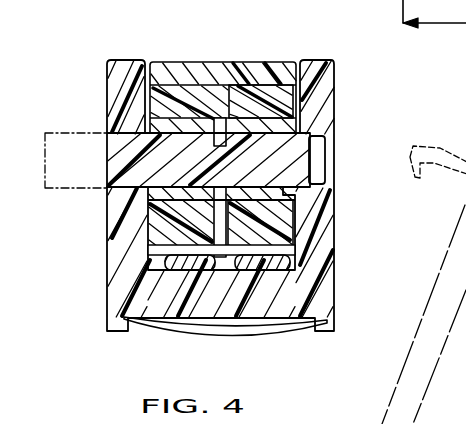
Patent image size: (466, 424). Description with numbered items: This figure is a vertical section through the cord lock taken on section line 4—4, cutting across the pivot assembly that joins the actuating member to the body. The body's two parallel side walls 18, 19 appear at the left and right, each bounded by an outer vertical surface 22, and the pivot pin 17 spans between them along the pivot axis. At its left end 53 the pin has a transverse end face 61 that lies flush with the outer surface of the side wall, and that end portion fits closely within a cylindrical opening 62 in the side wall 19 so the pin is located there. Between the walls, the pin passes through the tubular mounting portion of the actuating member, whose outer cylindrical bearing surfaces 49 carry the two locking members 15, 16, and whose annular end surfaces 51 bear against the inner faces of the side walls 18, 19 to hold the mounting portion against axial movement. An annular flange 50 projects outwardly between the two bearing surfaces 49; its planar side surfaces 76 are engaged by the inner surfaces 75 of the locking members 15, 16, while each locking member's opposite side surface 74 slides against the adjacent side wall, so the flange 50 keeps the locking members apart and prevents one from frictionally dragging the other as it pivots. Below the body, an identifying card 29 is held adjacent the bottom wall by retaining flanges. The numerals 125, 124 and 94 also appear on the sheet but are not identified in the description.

The side wall 19 is at (112, 60).
The end surfaces of tubular mounting portion 51 is at (140, 133).
The outer cylindrical bearing surfaces 49 is at (310, 97).
The inner surface of locking member 75 is at (217, 95).
The side surfaces of flange 76 is at (212, 70).
The transverse end face 61 is at (118, 183).
The pivot pin 17 is at (135, 148).
The left end of pin 53 is at (92, 140).
The cylindrical opening 62 is at (110, 183).
The outer vertical surface 22 is at (102, 262).
The side surface of locking member 74 is at (337, 265).
The locking member 16 is at (162, 205).
The annular flange 50 is at (165, 232).
The locking member 15 is at (320, 228).
The side wall 18 is at (336, 240).
The identifying card 29 is at (230, 340).
The section line 4 is at (424, 212).
The element 125 is at (0, 327).
The element 124 is at (4, 353).
The element 94 is at (14, 385).